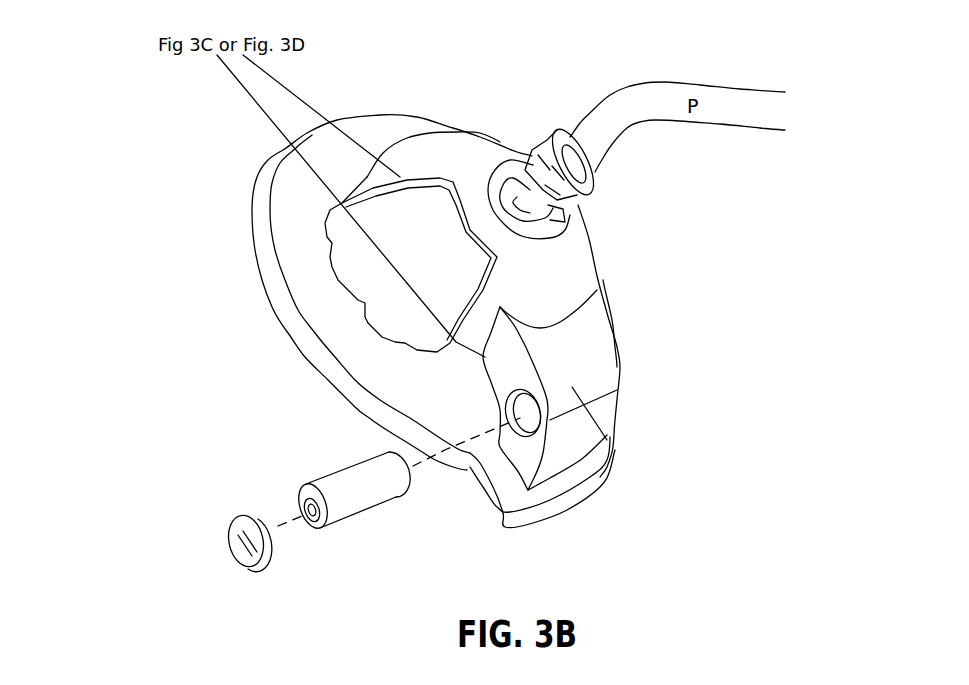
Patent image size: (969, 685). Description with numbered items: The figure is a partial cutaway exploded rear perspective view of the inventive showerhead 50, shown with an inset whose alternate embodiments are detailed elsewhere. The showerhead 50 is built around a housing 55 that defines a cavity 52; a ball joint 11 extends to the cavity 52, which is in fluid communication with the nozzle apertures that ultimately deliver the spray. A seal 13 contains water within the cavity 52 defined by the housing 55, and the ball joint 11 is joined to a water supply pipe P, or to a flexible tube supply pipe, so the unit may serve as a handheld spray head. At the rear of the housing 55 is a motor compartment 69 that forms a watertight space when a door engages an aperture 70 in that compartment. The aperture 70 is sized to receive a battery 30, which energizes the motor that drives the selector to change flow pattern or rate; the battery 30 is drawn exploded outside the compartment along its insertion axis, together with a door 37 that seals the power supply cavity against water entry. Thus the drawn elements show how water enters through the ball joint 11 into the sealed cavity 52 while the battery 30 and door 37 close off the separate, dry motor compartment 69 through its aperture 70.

The cavity 52 is at (387, 227).
The housing 55 is at (468, 148).
The showerhead 50 is at (703, 167).
The ball joint 11 is at (537, 222).
The seal 13 is at (563, 212).
The motor compartment 69 is at (618, 408).
The aperture 70 is at (616, 445).
The battery 30 is at (380, 500).
The door 37 is at (270, 538).